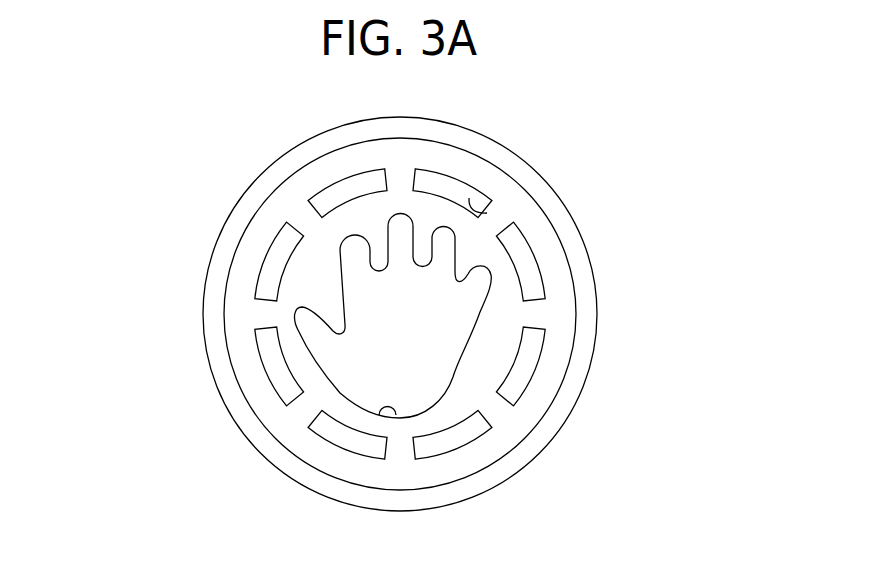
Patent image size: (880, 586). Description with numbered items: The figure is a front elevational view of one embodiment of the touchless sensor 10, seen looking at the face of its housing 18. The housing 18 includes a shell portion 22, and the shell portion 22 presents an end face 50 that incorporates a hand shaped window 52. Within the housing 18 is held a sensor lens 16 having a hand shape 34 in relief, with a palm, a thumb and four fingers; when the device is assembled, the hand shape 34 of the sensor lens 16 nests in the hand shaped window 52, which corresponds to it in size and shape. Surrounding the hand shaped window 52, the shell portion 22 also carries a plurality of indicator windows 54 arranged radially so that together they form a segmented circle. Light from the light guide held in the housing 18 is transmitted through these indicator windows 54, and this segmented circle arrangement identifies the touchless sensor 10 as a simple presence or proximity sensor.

The touchless sensor 10 is at (194, 157).
The indicator windows 54 is at (486, 215).
The housing 18 is at (480, 314).
The shell portion 22 is at (597, 310).
The end face 50 is at (512, 425).
The hand shaped window 52 is at (399, 417).
The sensor lens 16 is at (313, 343).
The hand shape 34 is at (358, 363).